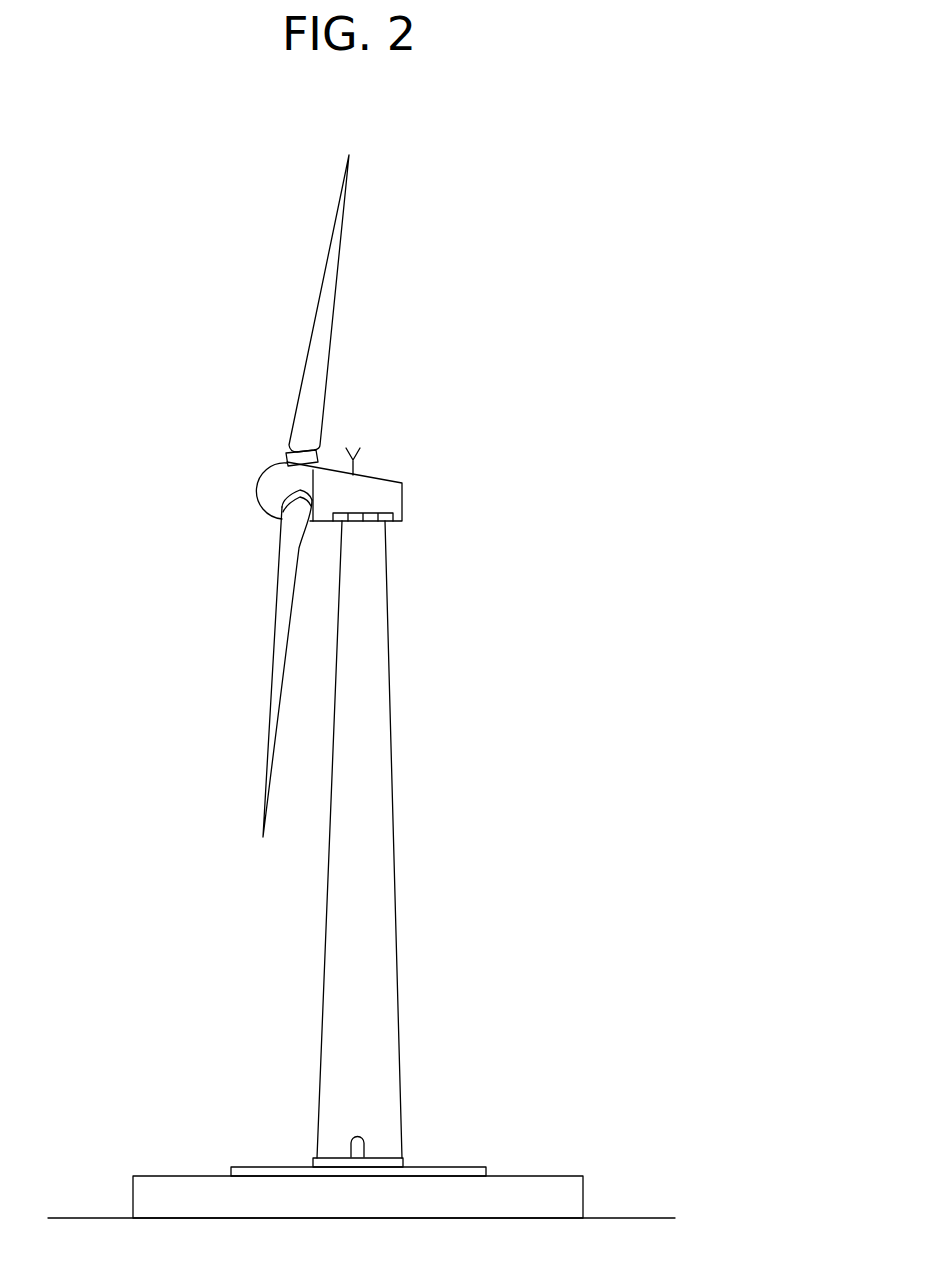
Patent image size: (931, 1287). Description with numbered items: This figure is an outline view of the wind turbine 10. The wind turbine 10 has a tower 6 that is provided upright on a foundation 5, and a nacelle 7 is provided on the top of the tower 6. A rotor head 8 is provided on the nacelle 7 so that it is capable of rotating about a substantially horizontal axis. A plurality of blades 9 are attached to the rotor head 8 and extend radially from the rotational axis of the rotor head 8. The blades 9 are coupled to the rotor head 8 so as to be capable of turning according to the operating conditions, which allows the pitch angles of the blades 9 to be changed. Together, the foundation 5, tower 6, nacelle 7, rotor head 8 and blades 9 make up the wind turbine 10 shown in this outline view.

The wind turbine 10 is at (508, 430).
The foundation 5 is at (548, 1175).
The tower 6 is at (392, 697).
The nacelle 7 is at (372, 473).
The rotor head 8 is at (260, 491).
The blades 9 is at (340, 257).